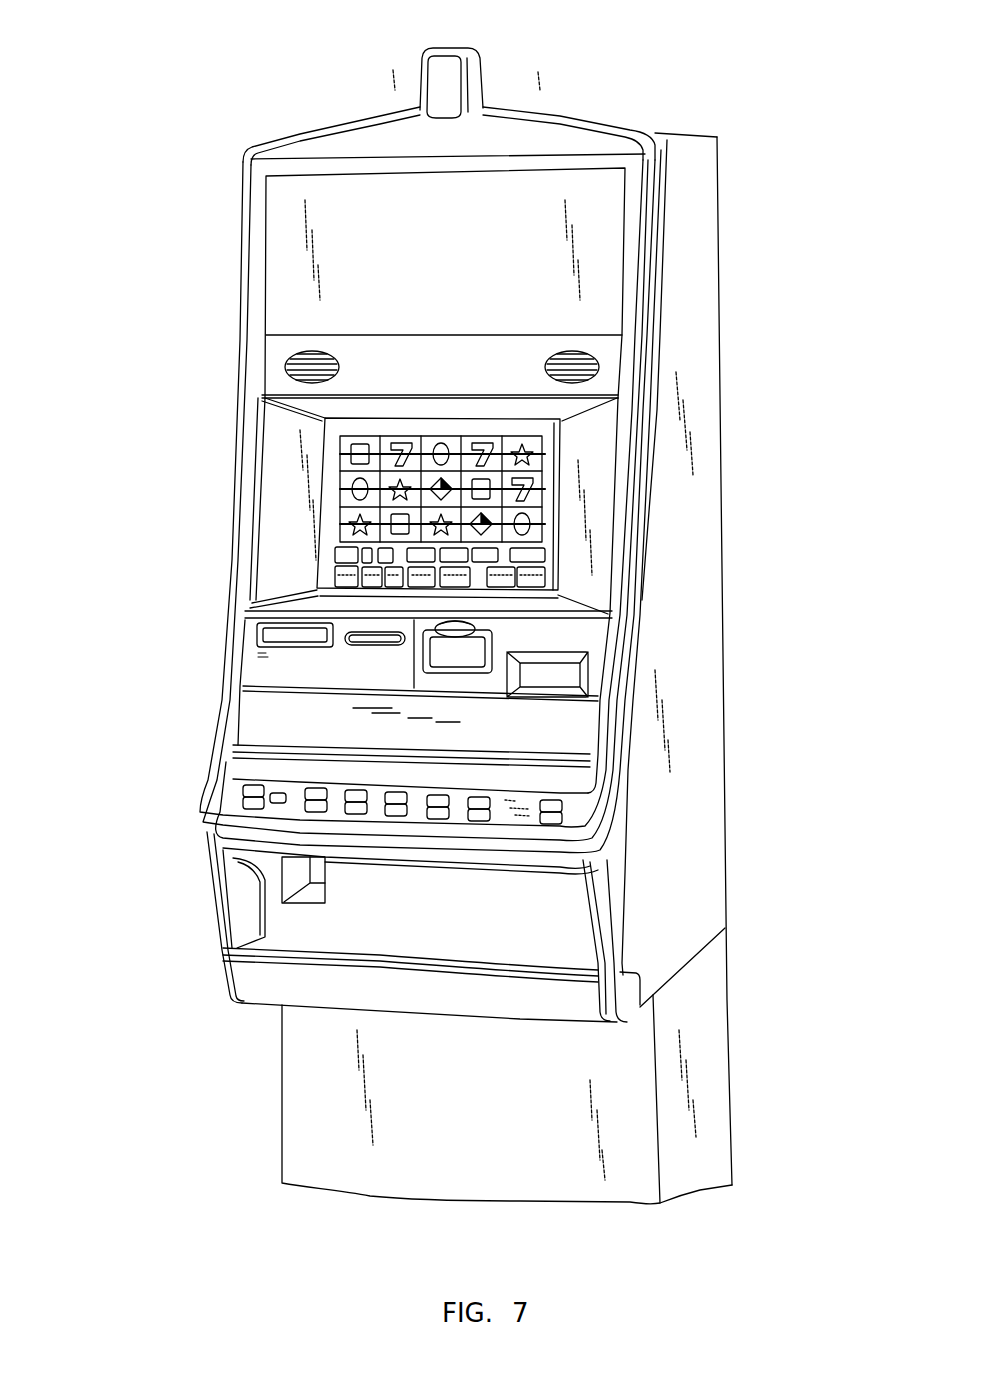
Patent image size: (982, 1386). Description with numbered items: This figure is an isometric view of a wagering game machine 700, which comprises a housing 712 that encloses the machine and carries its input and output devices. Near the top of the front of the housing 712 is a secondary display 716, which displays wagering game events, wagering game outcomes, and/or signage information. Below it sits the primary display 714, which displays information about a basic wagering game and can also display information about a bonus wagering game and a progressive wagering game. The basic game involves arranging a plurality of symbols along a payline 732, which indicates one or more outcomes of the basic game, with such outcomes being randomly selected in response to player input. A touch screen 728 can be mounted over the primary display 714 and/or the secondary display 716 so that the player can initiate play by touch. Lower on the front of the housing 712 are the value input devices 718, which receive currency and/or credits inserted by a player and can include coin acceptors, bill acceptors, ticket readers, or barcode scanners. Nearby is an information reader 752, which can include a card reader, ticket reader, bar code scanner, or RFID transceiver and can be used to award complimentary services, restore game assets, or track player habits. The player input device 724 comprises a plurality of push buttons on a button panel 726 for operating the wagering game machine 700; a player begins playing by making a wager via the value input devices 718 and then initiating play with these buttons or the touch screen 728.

The wagering game machine 700 is at (459, 602).
The housing 712 is at (704, 222).
The secondary display 716 is at (313, 248).
The payline 732 is at (440, 437).
The primary display 714 is at (320, 508).
The touch screen 728 is at (560, 577).
The value input devices 718 is at (490, 633).
The information reader 752 is at (345, 640).
The player input device 724 is at (580, 803).
The button panel 726 is at (300, 803).